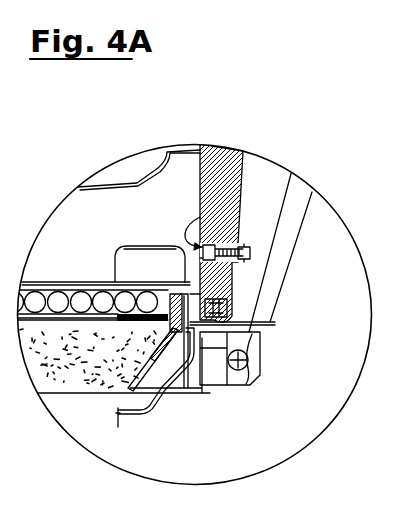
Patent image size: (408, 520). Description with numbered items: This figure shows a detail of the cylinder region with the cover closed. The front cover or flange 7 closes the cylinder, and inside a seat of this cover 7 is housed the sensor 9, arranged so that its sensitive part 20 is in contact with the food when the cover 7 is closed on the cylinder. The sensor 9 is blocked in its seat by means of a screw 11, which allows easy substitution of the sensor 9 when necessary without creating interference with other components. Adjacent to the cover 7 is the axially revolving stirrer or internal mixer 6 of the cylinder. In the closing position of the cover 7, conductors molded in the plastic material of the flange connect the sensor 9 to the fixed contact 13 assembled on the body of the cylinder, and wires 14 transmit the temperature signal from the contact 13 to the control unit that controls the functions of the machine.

The internal mixer 6 is at (127, 207).
The front cover 7 is at (218, 160).
The sensitive part 20 is at (222, 202).
The sensor 9 is at (222, 233).
The screw 11 is at (243, 258).
The fixed contact 13 is at (225, 313).
The wires 14 is at (160, 413).